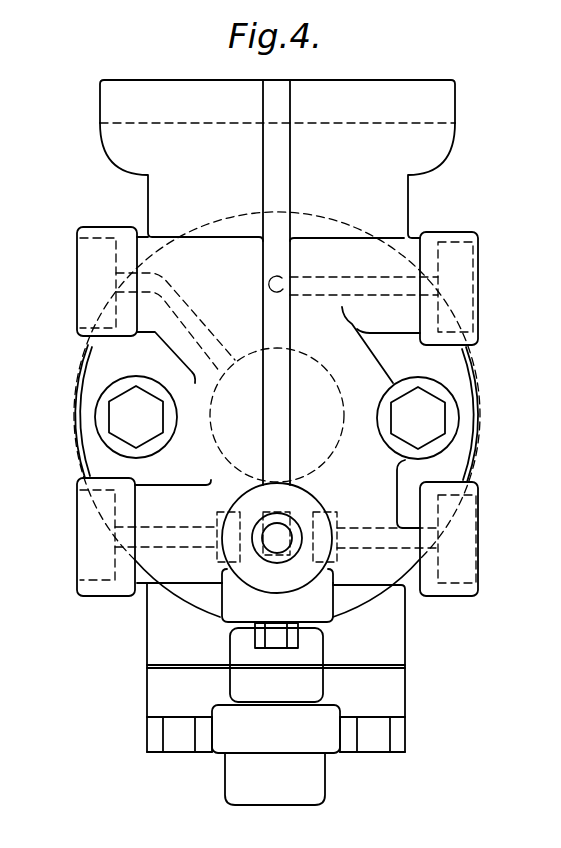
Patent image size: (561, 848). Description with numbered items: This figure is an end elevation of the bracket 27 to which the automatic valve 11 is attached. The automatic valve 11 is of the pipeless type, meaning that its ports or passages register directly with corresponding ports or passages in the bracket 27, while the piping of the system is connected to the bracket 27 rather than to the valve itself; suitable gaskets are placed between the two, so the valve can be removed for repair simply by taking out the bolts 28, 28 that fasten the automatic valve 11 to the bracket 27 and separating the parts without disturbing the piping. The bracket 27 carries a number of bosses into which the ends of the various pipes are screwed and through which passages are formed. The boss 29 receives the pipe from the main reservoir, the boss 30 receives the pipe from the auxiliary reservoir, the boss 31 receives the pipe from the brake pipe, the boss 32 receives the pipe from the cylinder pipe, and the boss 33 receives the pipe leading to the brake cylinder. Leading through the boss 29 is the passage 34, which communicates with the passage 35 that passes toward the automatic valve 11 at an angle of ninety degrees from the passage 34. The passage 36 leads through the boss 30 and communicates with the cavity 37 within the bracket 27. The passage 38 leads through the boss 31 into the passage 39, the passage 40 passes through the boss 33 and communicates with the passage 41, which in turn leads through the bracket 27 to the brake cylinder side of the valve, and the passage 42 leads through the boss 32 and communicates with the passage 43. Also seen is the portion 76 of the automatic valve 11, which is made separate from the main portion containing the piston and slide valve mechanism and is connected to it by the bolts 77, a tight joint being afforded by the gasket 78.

The automatic valve 11 is at (162, 637).
The bracket 27 is at (342, 307).
The bolts 28 is at (118, 420).
The boss 29 is at (478, 265).
The boss 30 is at (78, 262).
The boss 31 is at (478, 507).
The boss 32 is at (77, 552).
The boss 33 is at (252, 577).
The passage 34 is at (343, 283).
The passage 35 is at (287, 275).
The passage 36 is at (178, 310).
The cavity 37 is at (323, 387).
The passage 38 is at (387, 540).
The passage 39 is at (332, 560).
The passage 40 is at (279, 548).
The passage 41 is at (270, 556).
The passage 42 is at (160, 540).
The passage 43 is at (228, 550).
The portion of the automatic valve 76 is at (298, 737).
The bolts 77 is at (373, 737).
The gasket 78 is at (400, 667).